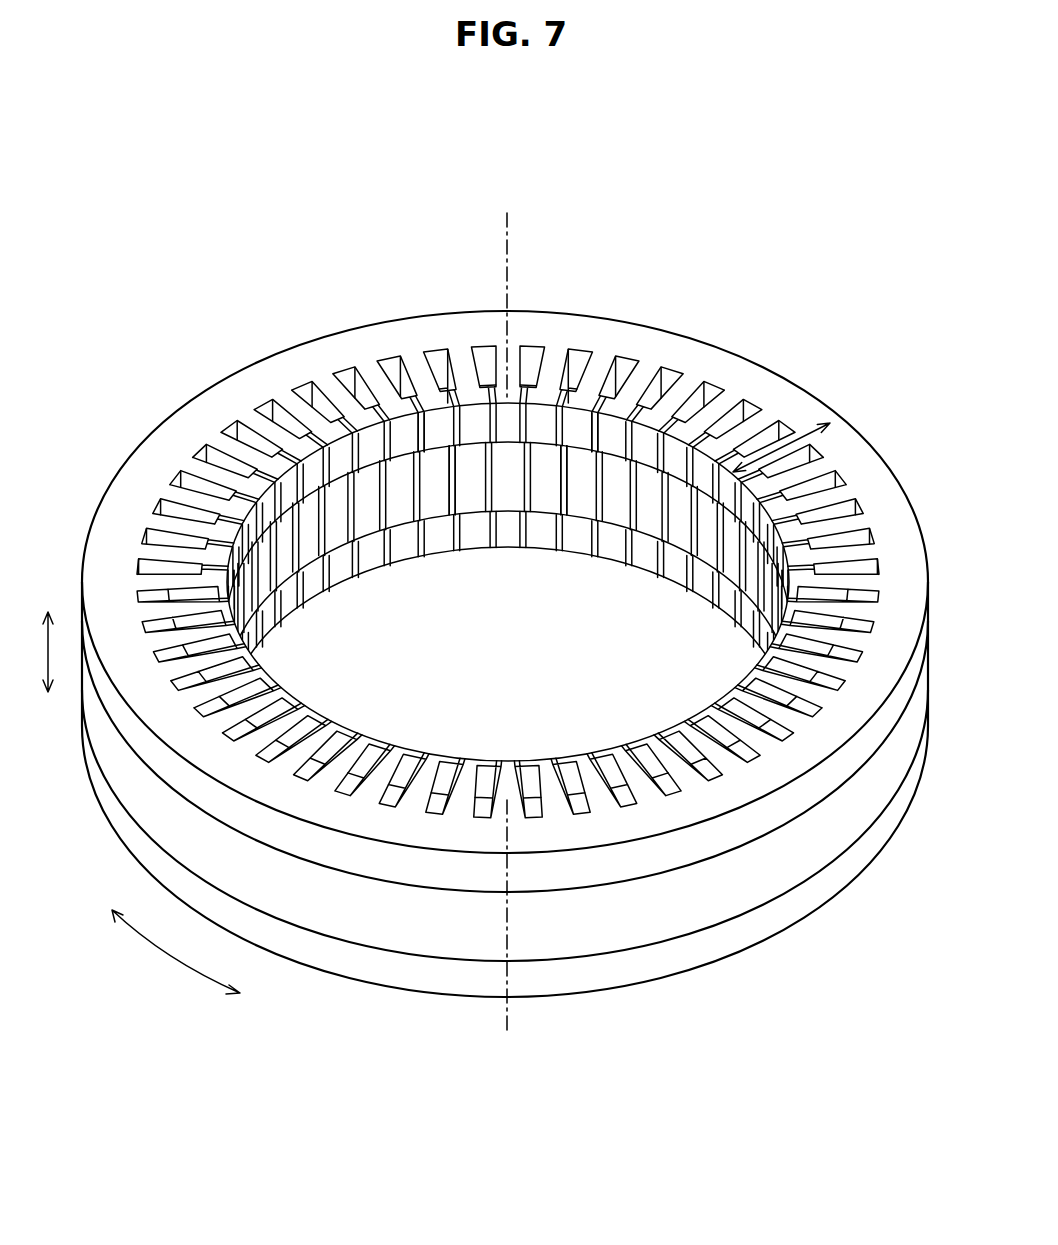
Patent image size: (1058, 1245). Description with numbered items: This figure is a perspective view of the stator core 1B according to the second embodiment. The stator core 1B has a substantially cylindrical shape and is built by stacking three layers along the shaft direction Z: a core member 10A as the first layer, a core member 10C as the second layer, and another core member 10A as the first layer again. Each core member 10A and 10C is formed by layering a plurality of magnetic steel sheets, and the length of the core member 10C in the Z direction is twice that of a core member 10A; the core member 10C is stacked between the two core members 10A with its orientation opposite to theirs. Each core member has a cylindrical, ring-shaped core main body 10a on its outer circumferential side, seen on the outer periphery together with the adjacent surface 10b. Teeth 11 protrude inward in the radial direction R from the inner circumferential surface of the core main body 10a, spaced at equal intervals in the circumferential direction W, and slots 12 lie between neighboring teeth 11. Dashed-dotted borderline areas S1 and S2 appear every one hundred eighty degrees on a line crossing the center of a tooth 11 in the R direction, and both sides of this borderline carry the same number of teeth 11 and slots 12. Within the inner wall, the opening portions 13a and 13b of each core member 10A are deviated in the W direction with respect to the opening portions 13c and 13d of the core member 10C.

The stator core 1B is at (810, 279).
The core member 10A is at (835, 772).
The core member 10C is at (812, 842).
The core main body 10a is at (879, 486).
The outer peripheral surface of second core portion 10b is at (683, 913).
The tooth 11 is at (648, 380).
The slot 12 is at (484, 362).
The opening portion 13a is at (413, 490).
The opening portion 13b is at (637, 440).
The opening portion 13c is at (462, 513).
The opening portion 13d is at (628, 490).
The radial direction R is at (818, 426).
The shaft direction Z is at (46, 628).
The circumferential direction W is at (191, 962).
The borderline area S1 is at (505, 290).
The borderline area S2 is at (507, 933).